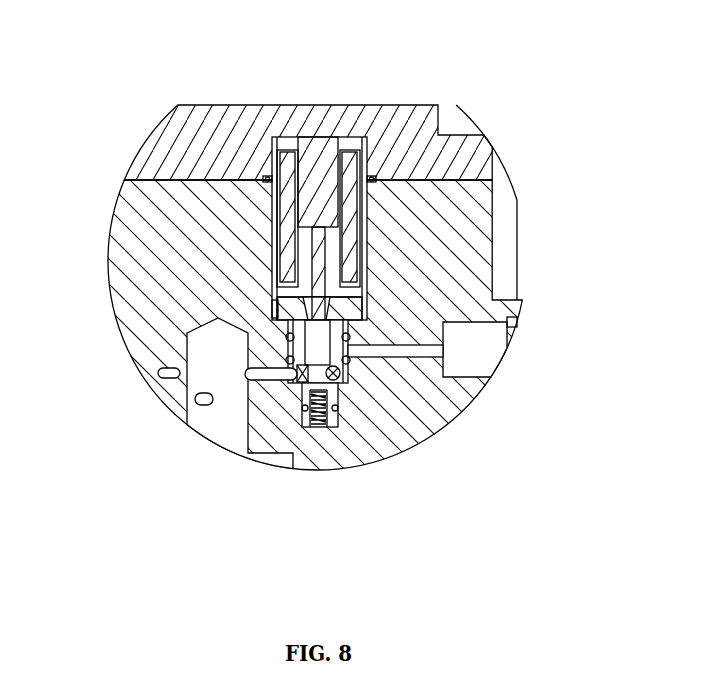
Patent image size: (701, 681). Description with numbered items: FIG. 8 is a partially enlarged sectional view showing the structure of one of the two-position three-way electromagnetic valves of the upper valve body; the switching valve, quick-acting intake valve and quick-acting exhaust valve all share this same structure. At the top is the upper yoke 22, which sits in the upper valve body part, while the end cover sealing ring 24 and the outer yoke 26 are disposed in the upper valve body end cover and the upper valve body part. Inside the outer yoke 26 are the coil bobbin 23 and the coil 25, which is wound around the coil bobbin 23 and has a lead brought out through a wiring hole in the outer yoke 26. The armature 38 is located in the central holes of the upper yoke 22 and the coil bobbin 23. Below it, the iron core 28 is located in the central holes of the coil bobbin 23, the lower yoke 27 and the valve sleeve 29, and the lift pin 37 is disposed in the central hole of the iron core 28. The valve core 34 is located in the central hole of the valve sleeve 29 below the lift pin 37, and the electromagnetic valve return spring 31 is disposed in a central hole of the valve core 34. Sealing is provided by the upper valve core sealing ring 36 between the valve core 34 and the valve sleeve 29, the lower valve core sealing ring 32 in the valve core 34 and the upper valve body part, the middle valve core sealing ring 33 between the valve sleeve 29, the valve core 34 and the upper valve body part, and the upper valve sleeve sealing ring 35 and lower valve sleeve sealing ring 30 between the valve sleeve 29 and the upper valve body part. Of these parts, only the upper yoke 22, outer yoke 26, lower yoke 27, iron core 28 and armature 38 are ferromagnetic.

The upper yoke 22 is at (356, 142).
The coil bobbin 23 is at (343, 160).
The end cover sealing ring 24 is at (371, 178).
The coil 25 is at (352, 197).
The outer yoke 26 is at (363, 232).
The lower yoke 27 is at (349, 294).
The iron core 28 is at (443, 353).
The valve sleeve 29 is at (347, 325).
The lower valve sleeve sealing ring 30 is at (343, 362).
The electromagnetic valve return spring 31 is at (301, 418).
The lower valve core sealing ring 32 is at (301, 410).
The middle valve core sealing ring 33 is at (252, 376).
The valve core 34 is at (320, 377).
The upper valve sleeve sealing ring 35 is at (292, 347).
The upper valve core sealing ring 36 is at (274, 312).
The lift pin 37 is at (299, 224).
The armature 38 is at (322, 197).